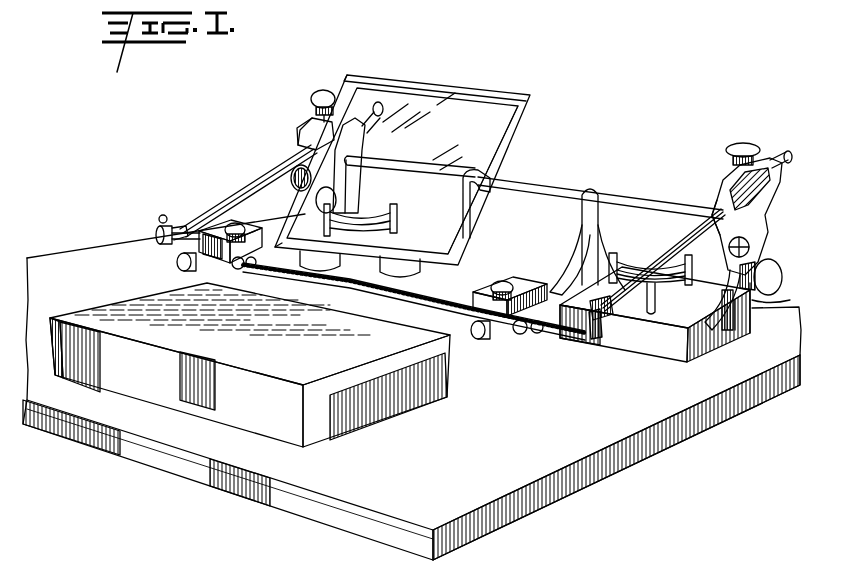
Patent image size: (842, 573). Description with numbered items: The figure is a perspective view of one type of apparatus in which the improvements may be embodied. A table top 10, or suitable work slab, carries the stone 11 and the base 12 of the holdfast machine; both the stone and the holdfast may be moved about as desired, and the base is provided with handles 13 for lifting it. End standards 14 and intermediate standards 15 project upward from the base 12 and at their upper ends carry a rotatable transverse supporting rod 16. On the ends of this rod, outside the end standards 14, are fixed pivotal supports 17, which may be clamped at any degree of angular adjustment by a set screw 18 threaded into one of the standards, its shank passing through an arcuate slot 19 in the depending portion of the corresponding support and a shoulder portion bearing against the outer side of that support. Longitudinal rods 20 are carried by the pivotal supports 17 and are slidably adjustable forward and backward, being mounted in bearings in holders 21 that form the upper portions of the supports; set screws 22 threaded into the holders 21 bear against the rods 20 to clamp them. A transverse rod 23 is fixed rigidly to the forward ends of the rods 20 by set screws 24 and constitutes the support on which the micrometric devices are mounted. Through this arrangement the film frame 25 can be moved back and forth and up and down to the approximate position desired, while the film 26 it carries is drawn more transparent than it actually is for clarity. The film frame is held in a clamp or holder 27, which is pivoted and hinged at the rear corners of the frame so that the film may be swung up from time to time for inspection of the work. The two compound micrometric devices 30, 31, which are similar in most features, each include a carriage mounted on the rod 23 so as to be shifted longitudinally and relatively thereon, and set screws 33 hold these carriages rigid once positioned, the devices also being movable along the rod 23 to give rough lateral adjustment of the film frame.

The table top 10 is at (412, 387).
The stone 11 is at (404, 411).
The base 12 is at (702, 354).
The handles 13 is at (367, 217).
The end standards 14 is at (360, 157).
The intermediate standards 15 is at (598, 242).
The transverse supporting rod 16 is at (553, 182).
The pivotal supports 17 is at (762, 245).
The set screw 18 is at (298, 185).
The arcuate slot 19 is at (723, 263).
The longitudinal rods 20 is at (209, 210).
The holders 21 is at (312, 124).
The set screws 22 is at (320, 96).
The transverse rod 23 is at (560, 328).
The set screws 24 is at (163, 226).
The film frame 25 is at (402, 155).
The film 26 is at (482, 136).
The clamp or holder 27 is at (414, 250).
The micrometric device 30 is at (172, 252).
The micrometric device 31 is at (513, 323).
The set screws 33 is at (237, 223).